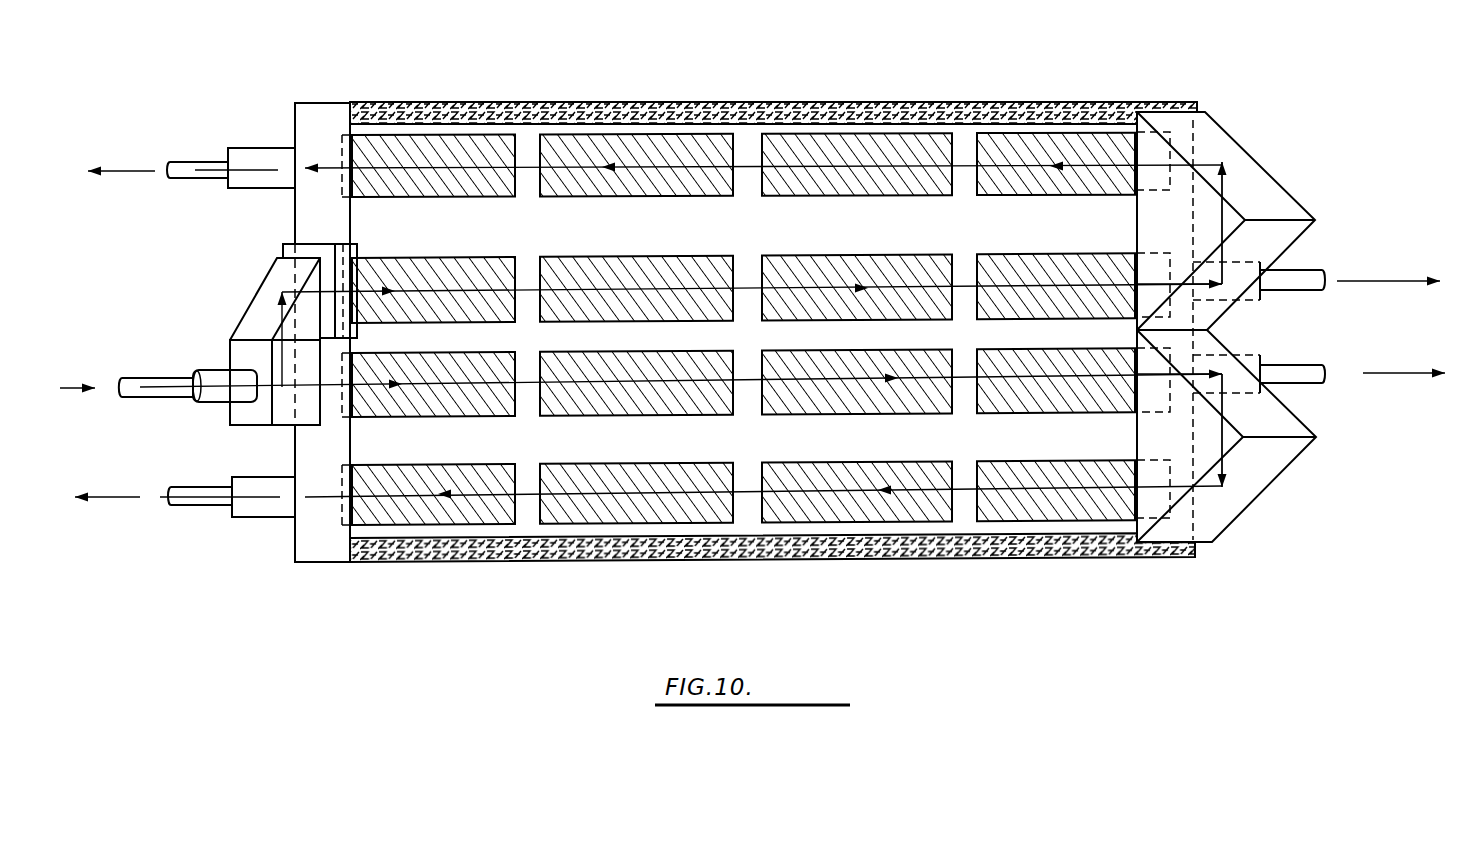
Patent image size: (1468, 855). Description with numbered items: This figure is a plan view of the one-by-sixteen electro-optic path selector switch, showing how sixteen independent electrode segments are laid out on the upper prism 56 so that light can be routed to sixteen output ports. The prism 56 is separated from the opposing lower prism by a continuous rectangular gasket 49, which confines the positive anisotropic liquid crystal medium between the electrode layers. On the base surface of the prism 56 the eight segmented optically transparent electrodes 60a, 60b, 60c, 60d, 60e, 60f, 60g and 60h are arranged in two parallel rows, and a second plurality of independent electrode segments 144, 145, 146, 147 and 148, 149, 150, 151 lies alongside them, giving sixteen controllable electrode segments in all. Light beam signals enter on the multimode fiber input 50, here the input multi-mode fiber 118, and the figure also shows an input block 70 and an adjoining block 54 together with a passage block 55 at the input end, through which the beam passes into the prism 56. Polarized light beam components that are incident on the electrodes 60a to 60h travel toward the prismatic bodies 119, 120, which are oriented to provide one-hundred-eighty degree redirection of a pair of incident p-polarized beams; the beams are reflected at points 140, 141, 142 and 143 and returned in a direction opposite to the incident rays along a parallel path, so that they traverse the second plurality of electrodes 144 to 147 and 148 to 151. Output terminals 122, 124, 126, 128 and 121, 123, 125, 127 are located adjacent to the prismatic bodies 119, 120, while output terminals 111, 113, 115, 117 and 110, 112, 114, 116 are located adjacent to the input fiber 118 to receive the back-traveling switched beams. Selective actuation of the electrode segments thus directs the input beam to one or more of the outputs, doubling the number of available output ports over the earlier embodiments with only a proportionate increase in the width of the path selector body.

The gasket 49 is at (775, 110).
The multimode fiber input 50 is at (255, 148).
The inlet manifold block 54 is at (240, 413).
The passage block 55 is at (340, 244).
The upper prism 56 is at (318, 103).
The segmented optically transparent electrode 60a is at (437, 417).
The segmented optically transparent electrode 60b is at (665, 415).
The segmented optically transparent electrode 60c is at (880, 413).
The segmented optically transparent electrode 60d is at (1060, 412).
The segmented optically transparent electrode 60e is at (437, 257).
The segmented optically transparent electrode 60f is at (663, 256).
The segmented optically transparent electrode 60g is at (873, 255).
The segmented optically transparent electrode 60h is at (1048, 254).
The inlet distribution block 70 is at (257, 292).
The output terminal 110 is at (153, 540).
The output terminal 112 is at (153, 540).
The output terminal 114 is at (153, 540).
The output terminal 116 is at (223, 507).
The output terminal 111 is at (148, 124).
The output terminal 113 is at (148, 124).
The output terminal 115 is at (148, 124).
The output terminal 117 is at (188, 163).
The input multi-mode fiber 118 is at (140, 378).
The prismatic body 119 is at (1282, 462).
The prismatic body 120 is at (1263, 188).
The output terminal 121 is at (1349, 417).
The output terminal 123 is at (1349, 417).
The output terminal 125 is at (1349, 417).
The output terminal 127 is at (1325, 372).
The output terminal 122 is at (1350, 252).
The output terminal 124 is at (1350, 252).
The output terminal 126 is at (1350, 252).
The output terminal 128 is at (1307, 272).
The reflection point 140 is at (1223, 286).
The reflection point 141 is at (1225, 158).
The reflection point 142 is at (1250, 395).
The reflection point 143 is at (1230, 485).
The independent electrode segment 144 is at (428, 197).
The independent electrode segment 145 is at (617, 196).
The independent electrode segment 146 is at (838, 195).
The independent electrode segment 147 is at (1055, 194).
The independent electrode segment 148 is at (420, 465).
The independent electrode segment 149 is at (600, 465).
The independent electrode segment 150 is at (825, 464).
The independent electrode segment 151 is at (1040, 462).